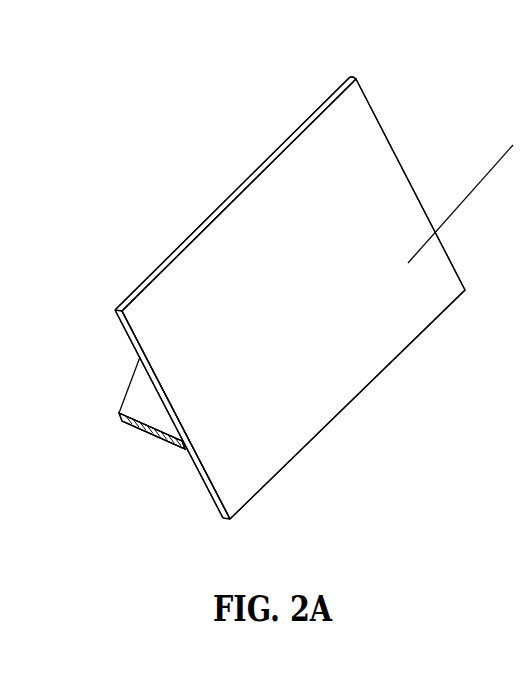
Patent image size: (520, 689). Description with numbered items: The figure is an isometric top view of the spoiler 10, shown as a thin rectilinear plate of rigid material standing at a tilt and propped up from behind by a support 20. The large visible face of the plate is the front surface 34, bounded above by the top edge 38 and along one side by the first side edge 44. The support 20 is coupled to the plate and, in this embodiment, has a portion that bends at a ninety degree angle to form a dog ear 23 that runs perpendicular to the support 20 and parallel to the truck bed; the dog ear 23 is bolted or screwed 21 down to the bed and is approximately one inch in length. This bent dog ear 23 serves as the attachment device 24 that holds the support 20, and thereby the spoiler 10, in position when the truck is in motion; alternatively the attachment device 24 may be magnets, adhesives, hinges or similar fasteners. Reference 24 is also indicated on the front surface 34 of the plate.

The spoiler 10 is at (302, 277).
The support 20 is at (142, 382).
The bolt or screw 21 is at (177, 448).
The dog ear 23 is at (138, 430).
The attachment device 24 is at (260, 313).
The front surface 34 is at (253, 213).
The top edge 38 is at (300, 128).
The first side edge 44 is at (125, 329).